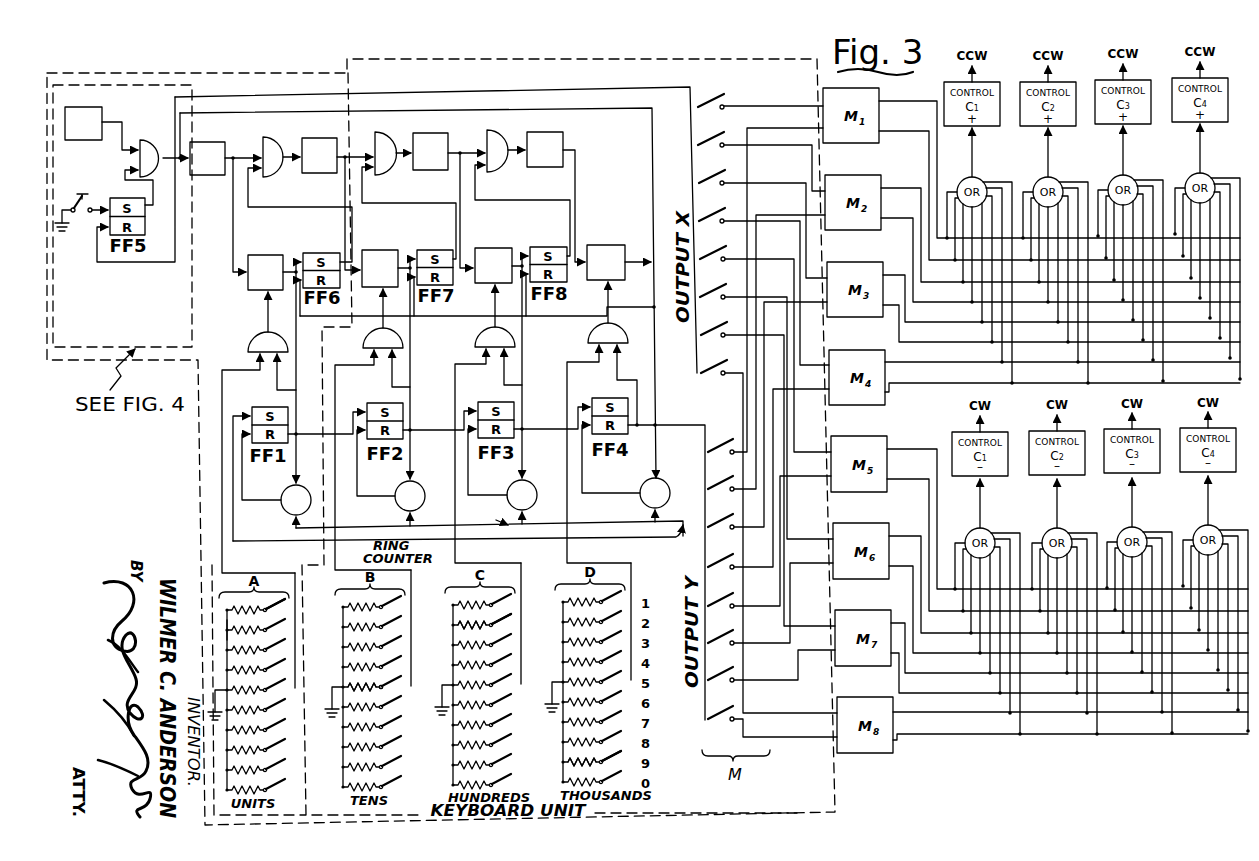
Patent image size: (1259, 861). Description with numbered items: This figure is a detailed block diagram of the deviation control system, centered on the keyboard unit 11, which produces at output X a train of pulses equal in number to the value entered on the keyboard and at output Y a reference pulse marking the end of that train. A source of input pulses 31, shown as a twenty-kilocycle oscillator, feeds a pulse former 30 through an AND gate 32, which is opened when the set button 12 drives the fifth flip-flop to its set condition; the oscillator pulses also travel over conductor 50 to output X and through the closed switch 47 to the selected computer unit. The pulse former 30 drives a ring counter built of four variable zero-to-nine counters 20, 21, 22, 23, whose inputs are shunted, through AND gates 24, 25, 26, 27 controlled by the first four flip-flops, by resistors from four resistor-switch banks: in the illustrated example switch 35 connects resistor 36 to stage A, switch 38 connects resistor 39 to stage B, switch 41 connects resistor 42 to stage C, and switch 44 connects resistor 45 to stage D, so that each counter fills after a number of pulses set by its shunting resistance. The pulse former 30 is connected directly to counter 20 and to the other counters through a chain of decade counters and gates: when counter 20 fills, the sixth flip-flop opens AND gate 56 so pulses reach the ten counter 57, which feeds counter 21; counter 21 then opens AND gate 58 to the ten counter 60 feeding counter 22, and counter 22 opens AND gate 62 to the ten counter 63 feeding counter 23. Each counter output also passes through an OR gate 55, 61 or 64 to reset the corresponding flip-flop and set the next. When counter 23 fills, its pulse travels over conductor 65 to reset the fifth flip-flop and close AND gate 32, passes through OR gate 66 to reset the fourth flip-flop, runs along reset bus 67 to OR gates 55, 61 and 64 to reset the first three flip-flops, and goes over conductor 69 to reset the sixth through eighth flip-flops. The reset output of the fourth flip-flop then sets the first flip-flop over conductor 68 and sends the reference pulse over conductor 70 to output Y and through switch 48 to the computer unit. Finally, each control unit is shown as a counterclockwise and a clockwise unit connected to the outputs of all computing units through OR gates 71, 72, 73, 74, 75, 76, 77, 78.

The keyboard unit 11 is at (559, 57).
The set button 12 is at (88, 191).
The variable "0-9" counter 20 is at (272, 254).
The variable "0-9" counter 21 is at (378, 250).
The variable "0-9" counter 22 is at (483, 248).
The variable "0-9" counter 23 is at (597, 245).
The AND gate 24 is at (256, 349).
The AND gate 25 is at (364, 344).
The AND gate 26 is at (474, 340).
The AND gate 27 is at (589, 336).
The pulse former 30 is at (211, 142).
The source of input pulses 31 is at (108, 113).
The AND gate 32 is at (152, 139).
The switch 35 is at (282, 613).
The resistor 36 is at (225, 622).
The switch 38 is at (390, 692).
The resistor 39 is at (348, 688).
The switch 41 is at (509, 621).
The resistor 42 is at (454, 630).
The switch 44 is at (625, 764).
The resistor 45 is at (566, 758).
The switch 47 is at (705, 367).
The switch 48 is at (726, 718).
The conductor 50 is at (400, 92).
The OR gate 55 is at (306, 485).
The AND gate 56 is at (275, 139).
The "10" counter 57 is at (322, 136).
The AND gate 58 is at (378, 134).
The "10" counter 60 is at (434, 131).
The OR gate 61 is at (420, 484).
The AND gate 62 is at (502, 132).
The "10" counter 63 is at (545, 130).
The OR gate 64 is at (534, 482).
The conductor 65 is at (653, 150).
The OR gate 66 is at (666, 478).
The reset bus 67 is at (585, 524).
The conductor 68 is at (251, 540).
The conductor 69 is at (618, 308).
The conductor 70 is at (672, 423).
The OR gate 71 is at (981, 178).
The OR gate 72 is at (1057, 176).
The OR gate 73 is at (1132, 174).
The OR gate 74 is at (1208, 171).
The OR gate 75 is at (988, 528).
The OR gate 76 is at (1065, 528).
The OR gate 77 is at (1140, 526).
The OR gate 78 is at (1215, 523).